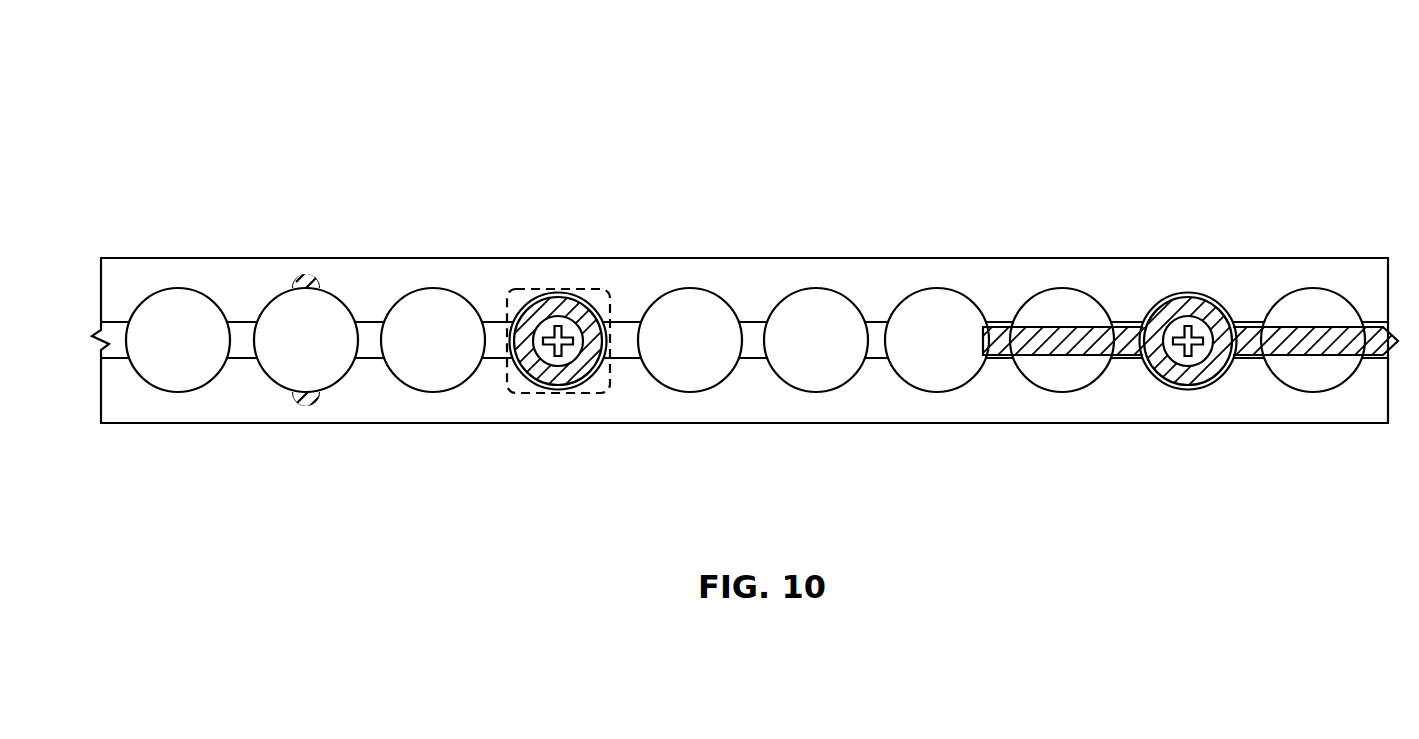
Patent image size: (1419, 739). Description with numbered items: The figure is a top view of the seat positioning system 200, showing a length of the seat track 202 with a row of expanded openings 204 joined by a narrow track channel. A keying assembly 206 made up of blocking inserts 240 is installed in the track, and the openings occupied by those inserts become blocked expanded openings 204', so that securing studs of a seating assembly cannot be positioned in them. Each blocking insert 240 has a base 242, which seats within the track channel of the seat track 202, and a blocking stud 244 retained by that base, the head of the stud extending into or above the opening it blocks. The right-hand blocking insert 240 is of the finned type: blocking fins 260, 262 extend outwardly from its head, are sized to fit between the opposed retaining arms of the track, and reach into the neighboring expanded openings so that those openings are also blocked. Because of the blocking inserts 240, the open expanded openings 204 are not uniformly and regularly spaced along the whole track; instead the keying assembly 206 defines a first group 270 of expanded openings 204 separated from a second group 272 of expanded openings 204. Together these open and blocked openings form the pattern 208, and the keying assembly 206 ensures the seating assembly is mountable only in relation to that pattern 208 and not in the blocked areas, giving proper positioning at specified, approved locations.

The seat positioning system 200 is at (1230, 262).
The seat track 202 is at (380, 248).
The expanded openings 204 is at (561, 308).
The blocked expanded openings 204' is at (955, 324).
The keying assembly 206 is at (1270, 423).
The pattern 208 is at (1393, 112).
The blocking insert 240 is at (570, 300).
The base 242 is at (510, 290).
The blocking stud 244 is at (600, 310).
The blocking fin 260 is at (1060, 330).
The blocking fin 262 is at (1333, 338).
The first group 270 is at (477, 427).
The second group 272 is at (703, 182).